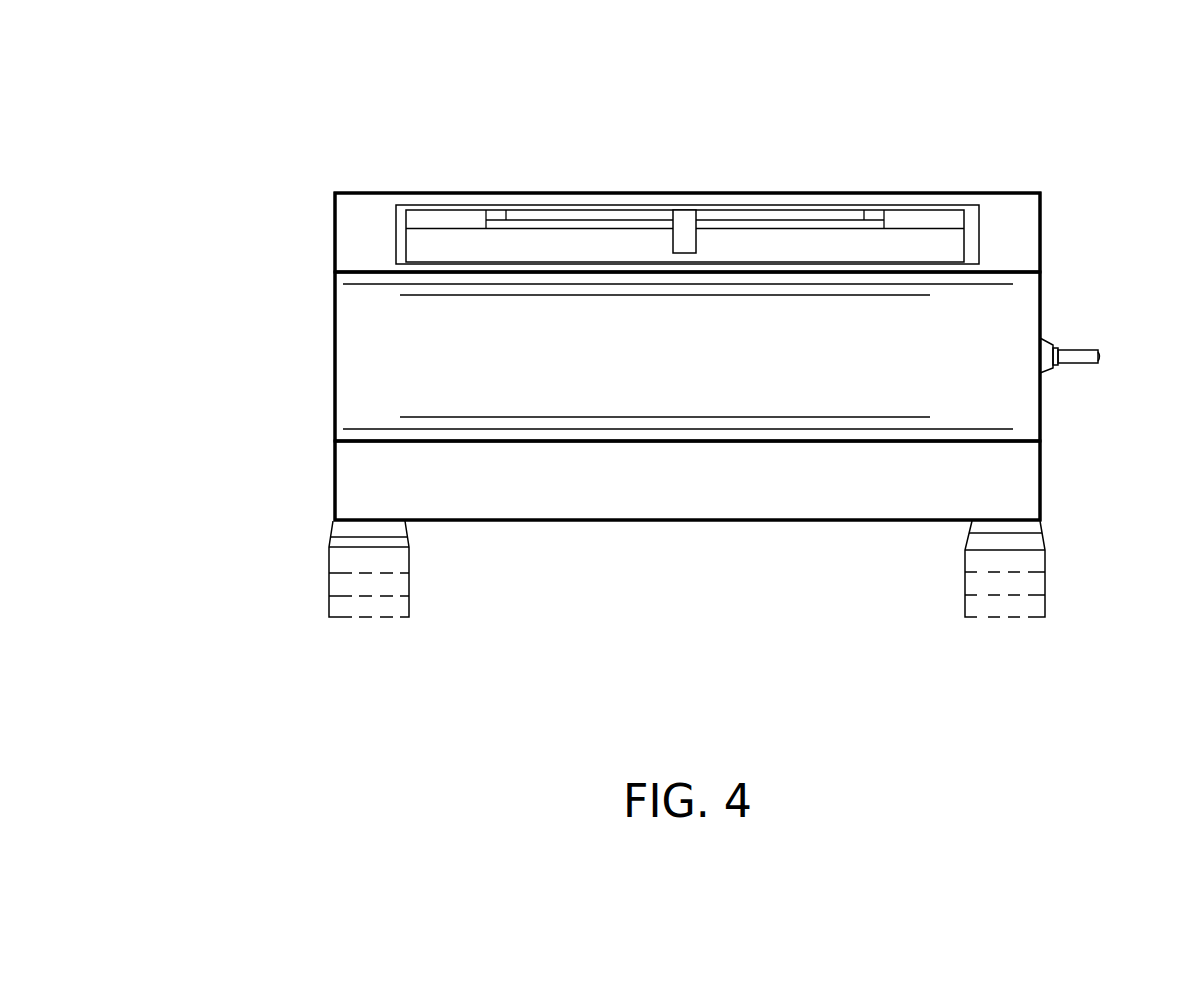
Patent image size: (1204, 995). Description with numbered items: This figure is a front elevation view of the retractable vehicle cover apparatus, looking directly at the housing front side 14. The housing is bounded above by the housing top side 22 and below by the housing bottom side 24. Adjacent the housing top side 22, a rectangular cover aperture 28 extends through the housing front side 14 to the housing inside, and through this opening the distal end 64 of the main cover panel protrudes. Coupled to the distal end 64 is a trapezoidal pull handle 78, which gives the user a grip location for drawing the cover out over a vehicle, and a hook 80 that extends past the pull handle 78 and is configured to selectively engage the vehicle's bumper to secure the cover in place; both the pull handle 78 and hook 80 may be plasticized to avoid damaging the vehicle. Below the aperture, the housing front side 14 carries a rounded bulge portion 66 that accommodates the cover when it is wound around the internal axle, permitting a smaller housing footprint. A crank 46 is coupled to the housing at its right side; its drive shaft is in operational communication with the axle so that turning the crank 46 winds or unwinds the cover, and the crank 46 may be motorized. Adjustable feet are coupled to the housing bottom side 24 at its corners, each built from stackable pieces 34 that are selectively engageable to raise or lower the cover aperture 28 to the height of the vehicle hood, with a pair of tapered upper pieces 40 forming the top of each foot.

The housing front side 14 is at (1010, 227).
The housing top side 22 is at (446, 193).
The cover aperture 28 is at (397, 243).
The distal end 64 is at (921, 222).
The pull handle 78 is at (784, 224).
The hook 80 is at (686, 242).
The rounded bulge portion 66 is at (330, 275).
The crank 46 is at (1053, 345).
The housing bottom side 24 is at (680, 521).
The upper pieces 40 is at (330, 538).
The stackable pieces 34 is at (1040, 524).